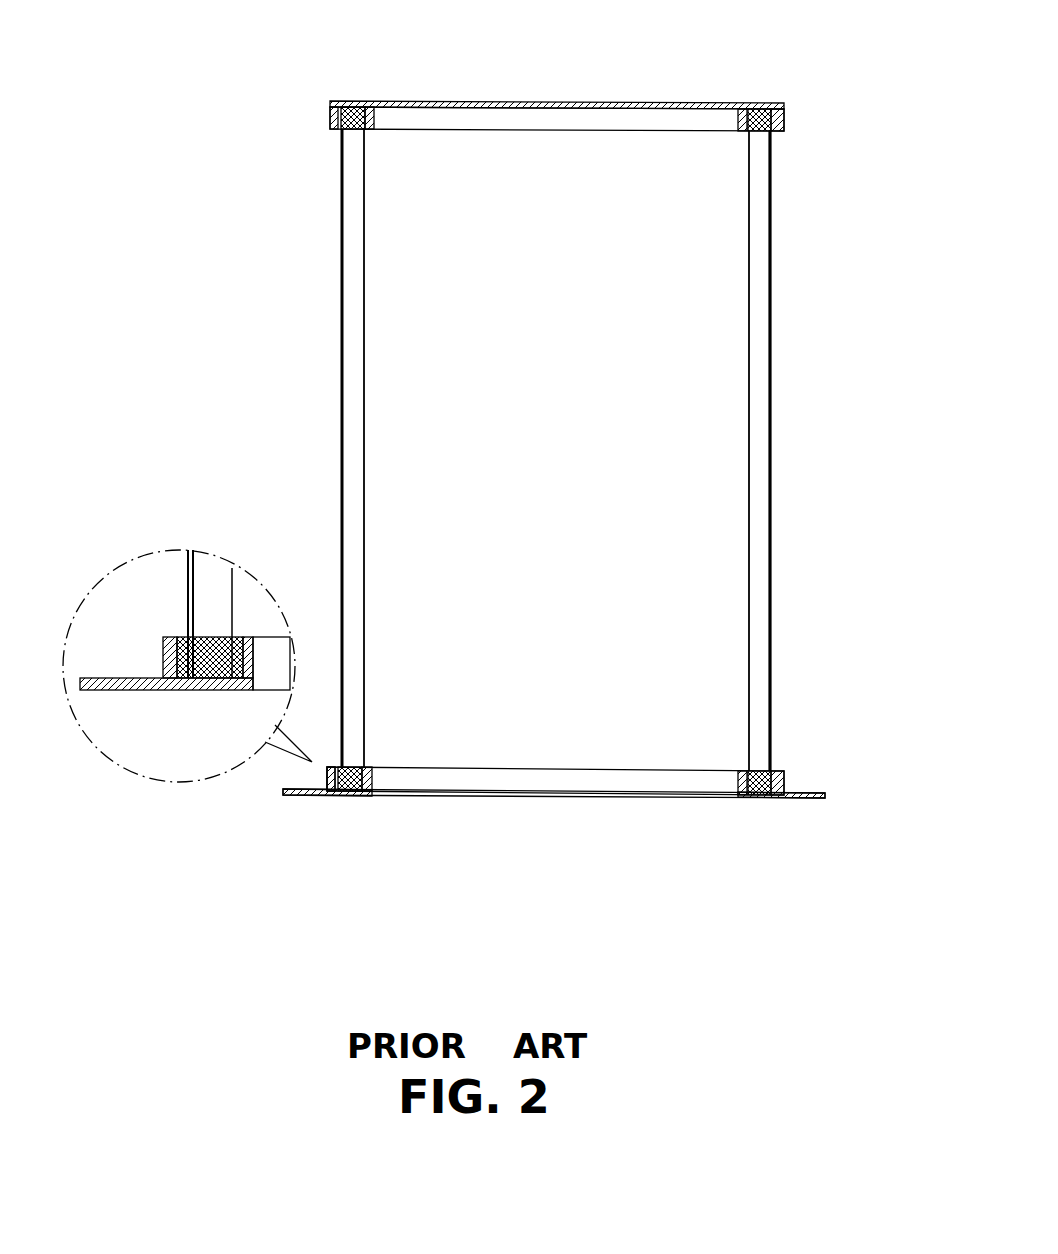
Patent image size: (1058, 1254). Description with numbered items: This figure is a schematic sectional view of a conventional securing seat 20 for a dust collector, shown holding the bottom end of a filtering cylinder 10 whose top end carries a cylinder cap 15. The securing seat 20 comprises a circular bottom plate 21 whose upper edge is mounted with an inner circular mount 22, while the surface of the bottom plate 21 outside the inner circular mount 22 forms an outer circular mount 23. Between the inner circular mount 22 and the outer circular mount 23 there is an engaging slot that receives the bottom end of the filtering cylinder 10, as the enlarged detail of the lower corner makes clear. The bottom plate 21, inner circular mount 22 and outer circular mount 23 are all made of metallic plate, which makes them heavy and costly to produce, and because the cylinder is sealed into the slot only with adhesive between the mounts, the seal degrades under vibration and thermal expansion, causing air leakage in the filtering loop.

The filtering cylinder 10 is at (757, 388).
The cylinder cap 15 is at (553, 100).
The securing seat 20 is at (485, 726).
The bottom plate 21 is at (298, 793).
The inner circular mount 22 is at (372, 785).
The outer circular mount 23 is at (322, 773).